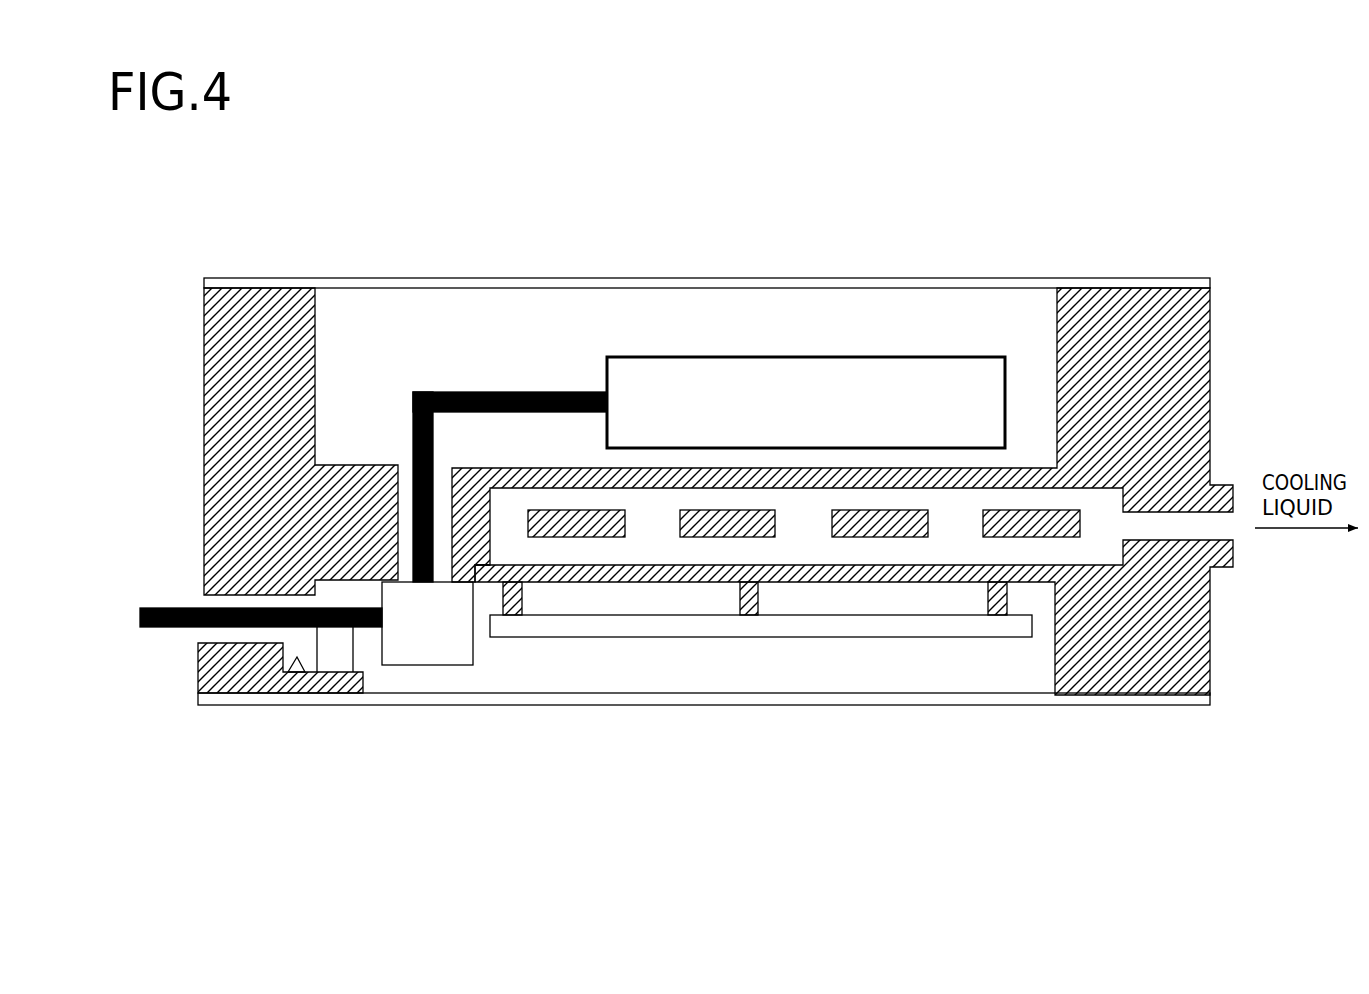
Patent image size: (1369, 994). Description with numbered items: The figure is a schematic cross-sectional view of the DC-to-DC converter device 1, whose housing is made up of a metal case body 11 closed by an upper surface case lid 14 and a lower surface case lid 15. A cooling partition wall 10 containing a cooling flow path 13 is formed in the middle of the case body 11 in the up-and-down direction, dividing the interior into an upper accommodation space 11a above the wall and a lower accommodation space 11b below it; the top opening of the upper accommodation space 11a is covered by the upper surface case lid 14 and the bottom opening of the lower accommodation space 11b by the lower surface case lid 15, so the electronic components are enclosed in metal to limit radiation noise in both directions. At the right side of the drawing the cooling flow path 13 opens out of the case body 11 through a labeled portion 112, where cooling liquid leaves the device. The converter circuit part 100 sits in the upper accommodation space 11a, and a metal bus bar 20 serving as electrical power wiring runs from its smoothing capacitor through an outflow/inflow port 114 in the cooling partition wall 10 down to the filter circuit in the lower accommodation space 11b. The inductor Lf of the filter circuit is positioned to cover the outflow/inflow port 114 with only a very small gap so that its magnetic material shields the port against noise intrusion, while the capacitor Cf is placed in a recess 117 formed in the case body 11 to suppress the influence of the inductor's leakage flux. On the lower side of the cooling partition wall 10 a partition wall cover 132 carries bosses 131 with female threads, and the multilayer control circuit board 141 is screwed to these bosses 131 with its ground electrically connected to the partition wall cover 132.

The DC-to-DC converter device 1 is at (202, 195).
The cooling partition wall 10 is at (1015, 467).
The case body 11 is at (222, 425).
The upper accommodation space 11a is at (883, 318).
The lower accommodation space 11b is at (688, 662).
The cooling flow path 13 is at (1093, 510).
The upper surface case lid 14 is at (590, 285).
The lower surface case lid 15 is at (1035, 698).
The metal bus bar 20 is at (475, 392).
The converter circuit part 100 is at (697, 357).
The cooling liquid outlet 112 is at (1222, 567).
The outflow/inflow port 114 is at (410, 482).
The recess 117 is at (285, 670).
The bosses 131 is at (752, 610).
The partition wall cover 132 is at (552, 567).
The control circuit board 141 is at (917, 625).
The capacitor Cf is at (340, 650).
The inductor Lf is at (432, 650).